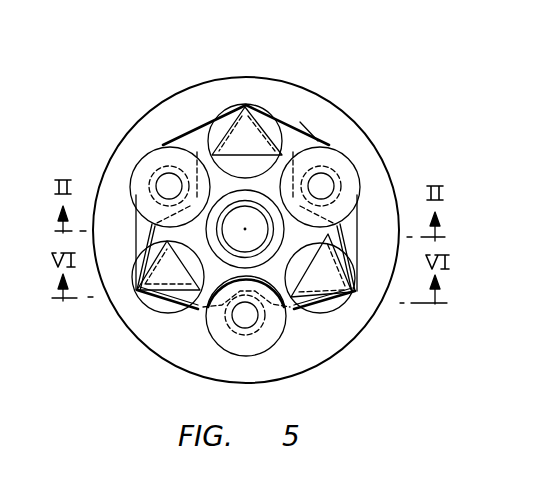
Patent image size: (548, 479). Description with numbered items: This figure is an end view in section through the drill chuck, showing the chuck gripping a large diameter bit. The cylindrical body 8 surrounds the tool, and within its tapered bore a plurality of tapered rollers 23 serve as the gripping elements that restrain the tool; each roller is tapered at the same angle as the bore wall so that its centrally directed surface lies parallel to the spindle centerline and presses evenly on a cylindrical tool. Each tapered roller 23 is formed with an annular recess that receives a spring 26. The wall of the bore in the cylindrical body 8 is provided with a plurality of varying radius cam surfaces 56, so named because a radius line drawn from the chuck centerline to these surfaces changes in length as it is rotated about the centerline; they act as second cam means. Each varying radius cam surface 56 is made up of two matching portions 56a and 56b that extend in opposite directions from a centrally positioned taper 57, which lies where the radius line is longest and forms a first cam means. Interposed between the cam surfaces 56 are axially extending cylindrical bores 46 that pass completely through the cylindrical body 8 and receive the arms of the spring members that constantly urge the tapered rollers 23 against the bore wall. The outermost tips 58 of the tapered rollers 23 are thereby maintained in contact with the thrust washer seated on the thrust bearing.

The cylindrical body 8 is at (207, 84).
The tapered rollers 23 is at (155, 160).
The spring 26 is at (200, 152).
The axially extending cylindrical bores 46 is at (260, 114).
The varying radius cam surfaces 56 is at (290, 142).
The matching portion of cam surface 56a is at (308, 140).
The matching portion of cam surface 56b is at (283, 335).
The centrally positioned taper 57 is at (352, 167).
The outermost tips 58 is at (246, 318).